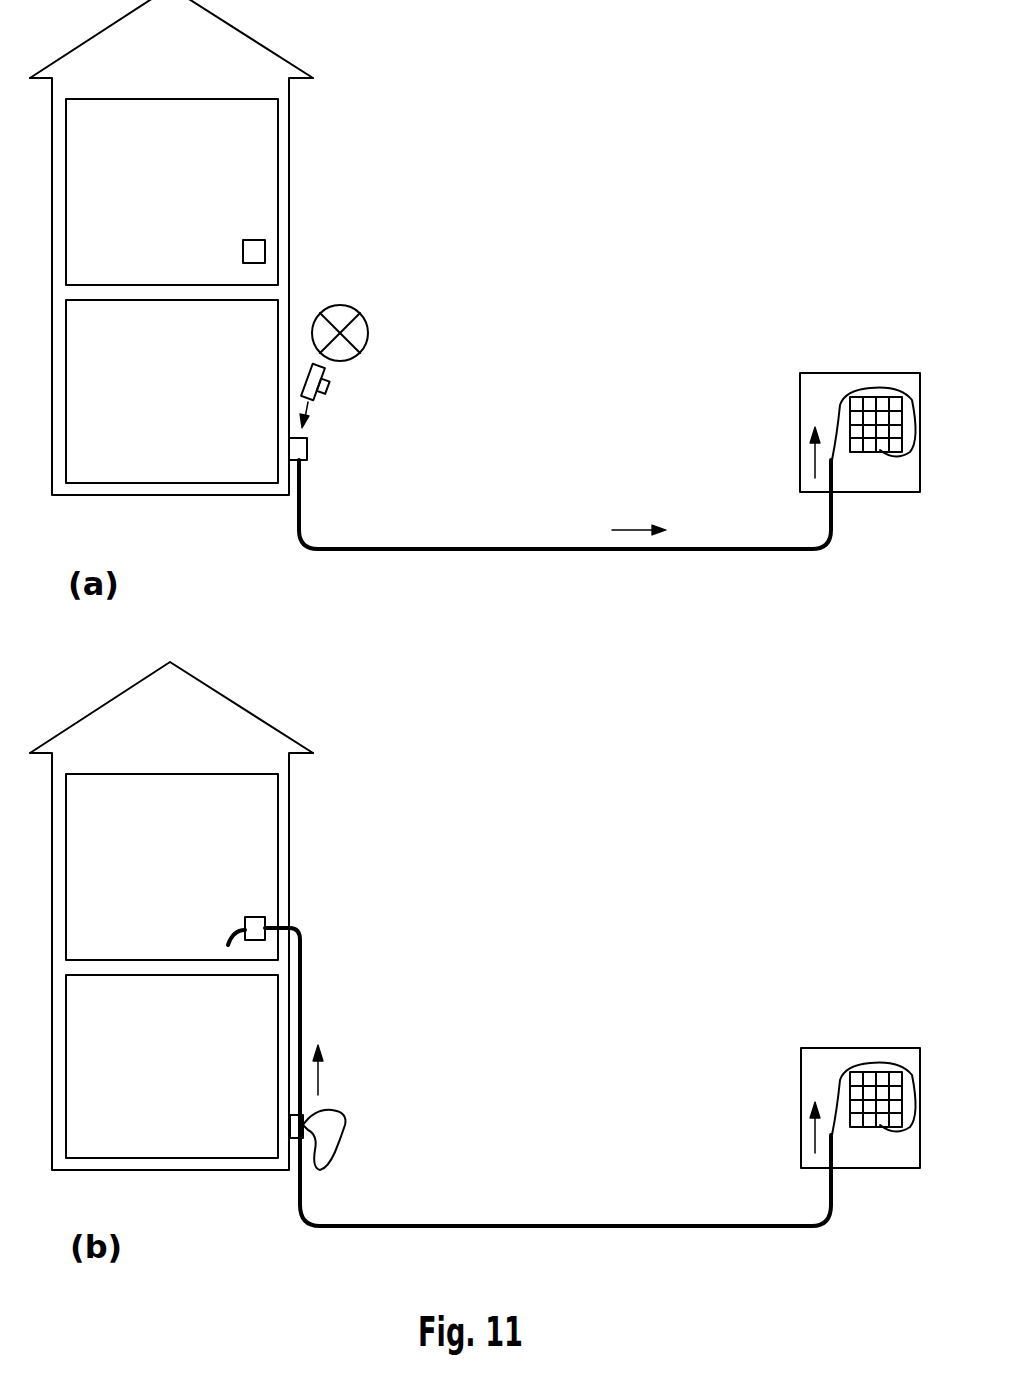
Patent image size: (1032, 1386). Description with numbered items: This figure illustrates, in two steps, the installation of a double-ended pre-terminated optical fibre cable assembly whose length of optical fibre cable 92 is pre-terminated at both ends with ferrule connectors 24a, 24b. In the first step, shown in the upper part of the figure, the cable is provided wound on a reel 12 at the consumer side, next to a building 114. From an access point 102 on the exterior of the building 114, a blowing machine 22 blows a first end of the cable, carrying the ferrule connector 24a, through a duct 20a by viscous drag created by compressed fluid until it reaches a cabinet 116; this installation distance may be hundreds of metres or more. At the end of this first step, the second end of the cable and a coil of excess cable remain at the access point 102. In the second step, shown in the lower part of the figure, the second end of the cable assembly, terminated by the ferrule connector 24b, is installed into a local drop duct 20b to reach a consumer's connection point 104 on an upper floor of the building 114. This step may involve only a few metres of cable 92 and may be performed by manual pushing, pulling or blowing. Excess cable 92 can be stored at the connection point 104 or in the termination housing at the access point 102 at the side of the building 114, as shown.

The building 114 is at (290, 116).
The reel 12 is at (368, 333).
The blowing machine 22 is at (331, 384).
The access point 102 is at (307, 450).
The duct 20a is at (498, 548).
The cabinet 116 is at (798, 410).
The ferrule connector 24a is at (876, 400).
The connection point 104 is at (255, 917).
The ferrule connector 24b is at (228, 944).
The local drop duct 20b is at (302, 1025).
The optical fibre cable 92 is at (345, 1138).